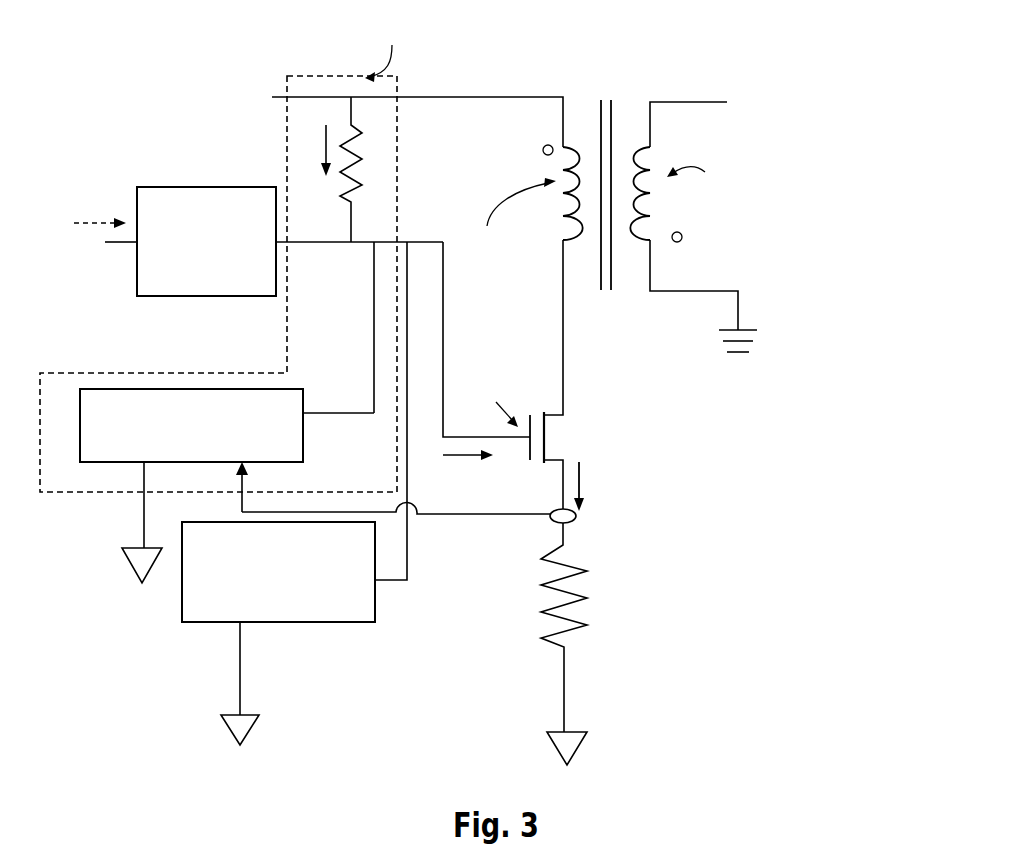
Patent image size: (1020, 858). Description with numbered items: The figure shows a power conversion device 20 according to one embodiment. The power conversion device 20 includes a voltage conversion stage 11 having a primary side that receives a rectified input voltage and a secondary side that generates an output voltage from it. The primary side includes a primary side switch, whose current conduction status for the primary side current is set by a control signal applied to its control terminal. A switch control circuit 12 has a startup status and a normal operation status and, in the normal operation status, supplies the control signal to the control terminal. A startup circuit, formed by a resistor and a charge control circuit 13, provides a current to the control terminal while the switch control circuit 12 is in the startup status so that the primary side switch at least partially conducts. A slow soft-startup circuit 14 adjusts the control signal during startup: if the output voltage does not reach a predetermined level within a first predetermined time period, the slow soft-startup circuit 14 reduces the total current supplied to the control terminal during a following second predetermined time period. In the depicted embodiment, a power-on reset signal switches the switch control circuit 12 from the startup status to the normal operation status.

The power conversion device 20 is at (212, 46).
The voltage conversion stage 11 is at (621, 92).
The switch control circuit 12 is at (231, 283).
The charge control circuit 13 is at (210, 452).
The slow soft-startup circuit 14 is at (264, 611).